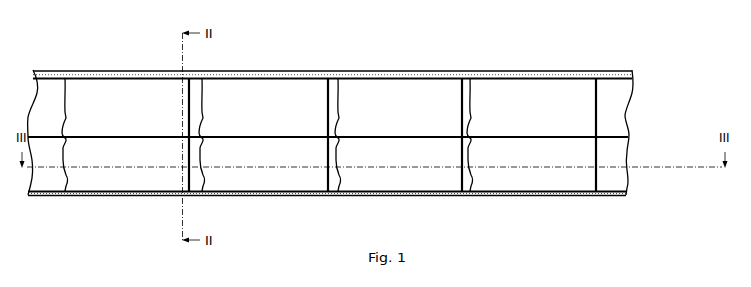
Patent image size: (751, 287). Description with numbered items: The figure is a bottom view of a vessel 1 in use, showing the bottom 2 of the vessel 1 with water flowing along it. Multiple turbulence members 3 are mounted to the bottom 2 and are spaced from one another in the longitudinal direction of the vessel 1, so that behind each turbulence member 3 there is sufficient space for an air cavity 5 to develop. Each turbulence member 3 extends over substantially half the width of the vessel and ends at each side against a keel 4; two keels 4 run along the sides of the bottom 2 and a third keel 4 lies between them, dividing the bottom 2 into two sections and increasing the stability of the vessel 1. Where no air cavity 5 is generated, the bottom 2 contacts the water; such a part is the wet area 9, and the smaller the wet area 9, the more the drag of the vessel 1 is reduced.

The vessel 1 is at (339, 144).
The bottom 2 is at (621, 175).
The turbulence member 3 is at (240, 93).
The keel 4 is at (416, 77).
The air cavity 5 is at (305, 93).
The wet area 9 is at (381, 93).